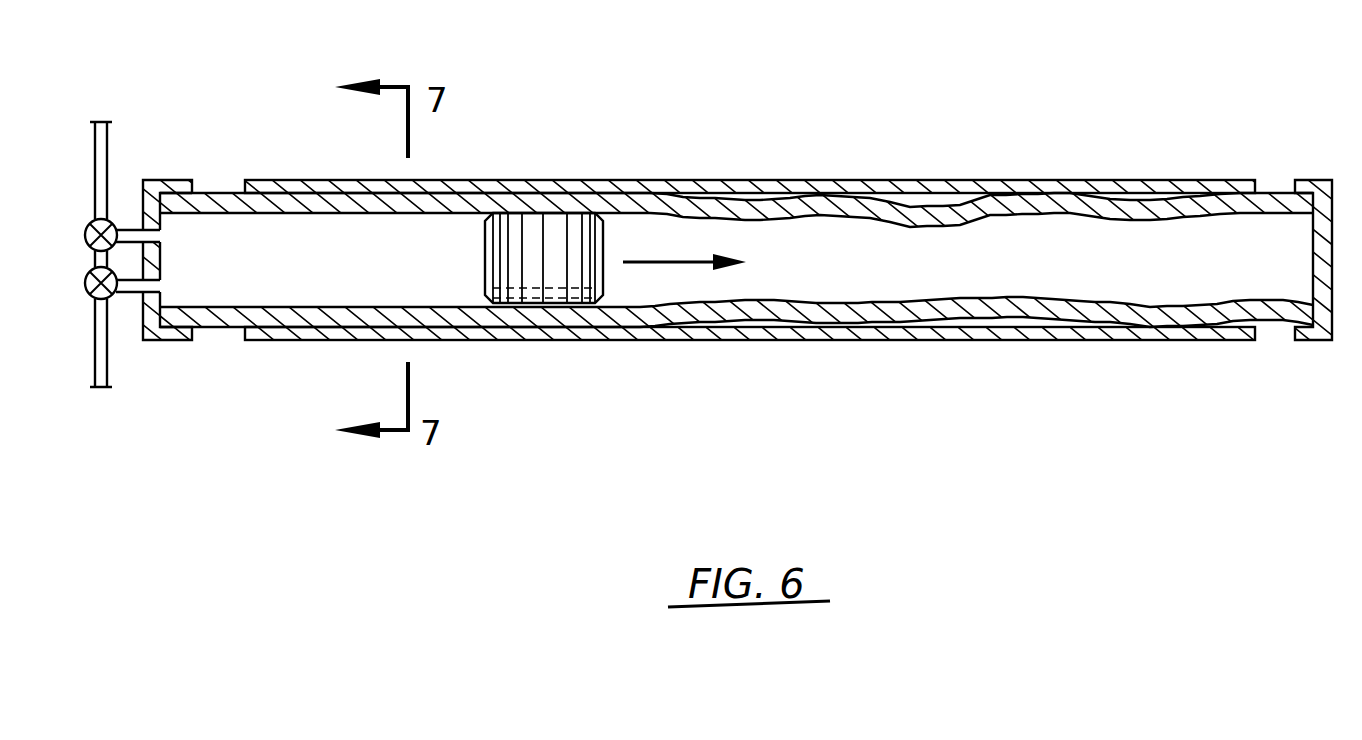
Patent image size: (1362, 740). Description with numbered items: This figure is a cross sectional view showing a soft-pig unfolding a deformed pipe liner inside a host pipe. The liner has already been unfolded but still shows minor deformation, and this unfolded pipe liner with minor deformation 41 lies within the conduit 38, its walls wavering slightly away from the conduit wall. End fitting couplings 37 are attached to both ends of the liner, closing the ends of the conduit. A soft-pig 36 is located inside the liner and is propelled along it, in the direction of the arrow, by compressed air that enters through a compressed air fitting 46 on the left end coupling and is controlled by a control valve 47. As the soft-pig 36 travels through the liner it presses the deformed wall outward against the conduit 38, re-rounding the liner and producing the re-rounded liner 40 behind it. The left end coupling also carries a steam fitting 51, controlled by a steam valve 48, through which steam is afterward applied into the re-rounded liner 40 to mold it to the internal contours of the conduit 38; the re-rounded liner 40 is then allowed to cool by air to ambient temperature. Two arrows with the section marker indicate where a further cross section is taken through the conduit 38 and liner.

The soft-pig 36 is at (532, 237).
The end fitting coupling 37 is at (154, 181).
The conduit 38 is at (665, 181).
The re-rounded liner 40 is at (681, 218).
The unfolded pipe liner with minor deformation 41 is at (944, 208).
The compressed air fitting 46 is at (109, 150).
The control valve 47 is at (90, 222).
The steam valve 48 is at (92, 298).
The steam fitting 51 is at (108, 365).